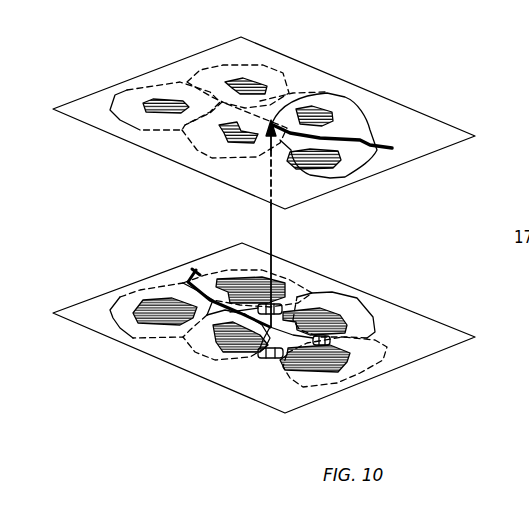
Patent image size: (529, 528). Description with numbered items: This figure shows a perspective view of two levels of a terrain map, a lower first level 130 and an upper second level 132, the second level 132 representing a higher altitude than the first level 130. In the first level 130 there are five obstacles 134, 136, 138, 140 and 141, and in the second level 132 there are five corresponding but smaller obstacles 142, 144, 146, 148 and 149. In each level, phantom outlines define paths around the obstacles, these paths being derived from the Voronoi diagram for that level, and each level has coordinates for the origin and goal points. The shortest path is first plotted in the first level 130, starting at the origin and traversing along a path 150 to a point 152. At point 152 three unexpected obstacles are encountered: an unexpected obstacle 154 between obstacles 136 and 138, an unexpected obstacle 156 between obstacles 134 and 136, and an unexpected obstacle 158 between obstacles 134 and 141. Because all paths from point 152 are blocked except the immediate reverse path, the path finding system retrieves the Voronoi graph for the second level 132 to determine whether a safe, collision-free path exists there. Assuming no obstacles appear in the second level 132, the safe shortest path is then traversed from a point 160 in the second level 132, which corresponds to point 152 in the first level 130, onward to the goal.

The first level 130 is at (403, 370).
The second level 132 is at (424, 157).
The obstacle 134 is at (322, 370).
The obstacle 136 is at (332, 313).
The obstacle 138 is at (240, 277).
The obstacle 140 is at (142, 314).
The obstacle 141 is at (220, 342).
The obstacle 142 is at (322, 167).
The obstacle 144 is at (362, 138).
The obstacle 146 is at (238, 82).
The obstacle 148 is at (160, 100).
The obstacle 149 is at (232, 140).
The path 150 is at (190, 275).
The point 152 is at (258, 352).
The unexpected obstacle 154 is at (270, 308).
The unexpected obstacle 156 is at (372, 330).
The unexpected obstacle 158 is at (272, 358).
The point 160 is at (332, 95).